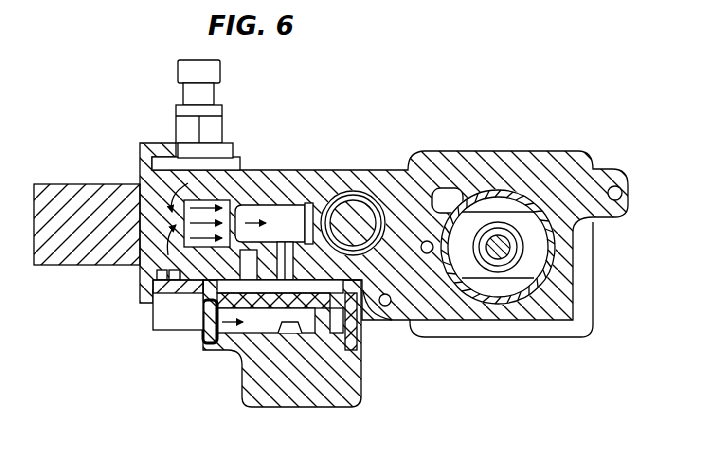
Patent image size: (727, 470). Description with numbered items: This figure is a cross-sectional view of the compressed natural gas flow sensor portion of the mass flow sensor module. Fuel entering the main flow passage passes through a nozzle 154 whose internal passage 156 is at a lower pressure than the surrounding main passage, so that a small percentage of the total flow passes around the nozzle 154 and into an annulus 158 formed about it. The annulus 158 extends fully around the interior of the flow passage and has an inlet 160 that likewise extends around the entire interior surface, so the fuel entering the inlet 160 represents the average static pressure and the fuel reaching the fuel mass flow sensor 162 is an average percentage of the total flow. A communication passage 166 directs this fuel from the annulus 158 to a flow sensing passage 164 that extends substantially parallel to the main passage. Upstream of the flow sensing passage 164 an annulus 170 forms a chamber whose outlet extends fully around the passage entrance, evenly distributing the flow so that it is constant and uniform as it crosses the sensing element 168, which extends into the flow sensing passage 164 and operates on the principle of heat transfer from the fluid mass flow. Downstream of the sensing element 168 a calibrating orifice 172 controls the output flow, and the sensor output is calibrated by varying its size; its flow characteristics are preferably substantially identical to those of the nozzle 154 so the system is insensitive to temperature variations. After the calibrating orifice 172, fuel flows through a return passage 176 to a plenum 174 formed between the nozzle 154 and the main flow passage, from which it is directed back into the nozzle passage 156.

The nozzle 154 is at (283, 208).
The passage of the nozzle 156 is at (317, 205).
The annulus 158 is at (250, 200).
The inlet 160 is at (153, 284).
The fuel mass flow sensor 162 is at (243, 383).
The flow sensing passage 164 is at (210, 334).
The communication passage 166 is at (155, 311).
The sensing element 168 is at (361, 397).
The annulus 170 is at (243, 350).
The calibrating orifice 172 is at (362, 345).
The plenum 174 is at (358, 255).
The return passage 176 is at (362, 325).